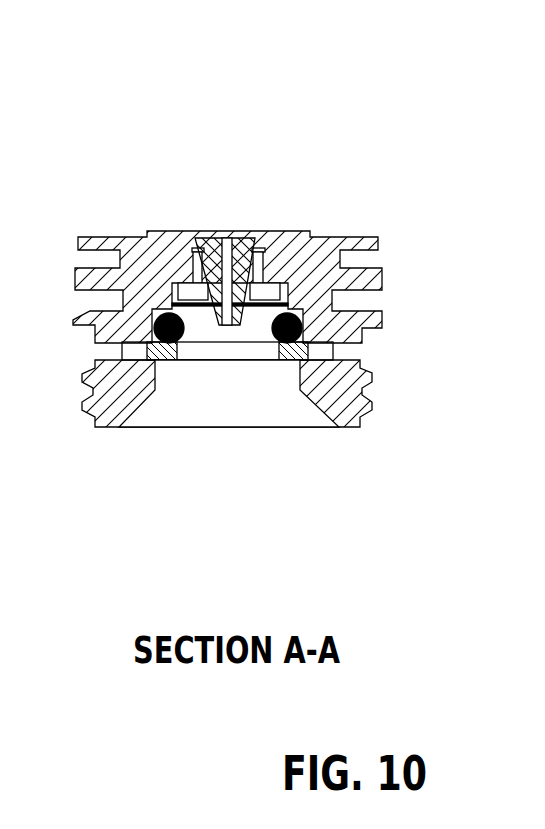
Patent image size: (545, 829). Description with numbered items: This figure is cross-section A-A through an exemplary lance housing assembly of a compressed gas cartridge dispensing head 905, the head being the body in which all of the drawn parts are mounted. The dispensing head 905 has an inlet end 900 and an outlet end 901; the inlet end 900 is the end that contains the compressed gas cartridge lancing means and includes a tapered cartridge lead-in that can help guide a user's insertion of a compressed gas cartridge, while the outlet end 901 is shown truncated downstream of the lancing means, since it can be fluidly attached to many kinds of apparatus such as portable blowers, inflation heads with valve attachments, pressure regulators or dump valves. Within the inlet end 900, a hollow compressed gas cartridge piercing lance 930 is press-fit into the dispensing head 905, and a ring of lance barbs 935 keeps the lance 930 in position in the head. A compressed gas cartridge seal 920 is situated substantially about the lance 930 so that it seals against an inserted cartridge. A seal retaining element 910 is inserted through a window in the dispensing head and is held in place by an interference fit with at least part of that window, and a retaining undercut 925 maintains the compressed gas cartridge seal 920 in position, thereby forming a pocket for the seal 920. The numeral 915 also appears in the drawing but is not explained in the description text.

The inlet end 900 is at (298, 461).
The outlet end 901 is at (352, 203).
The dispensing head 905 is at (379, 278).
The seal retaining element 910 is at (368, 353).
The lower body 915 is at (377, 393).
The compressed gas cartridge seal 920 is at (163, 312).
The retaining undercut 925 is at (184, 339).
The hollow compressed gas cartridge piercing lance 930 is at (215, 245).
The lance barbs 935 is at (268, 247).